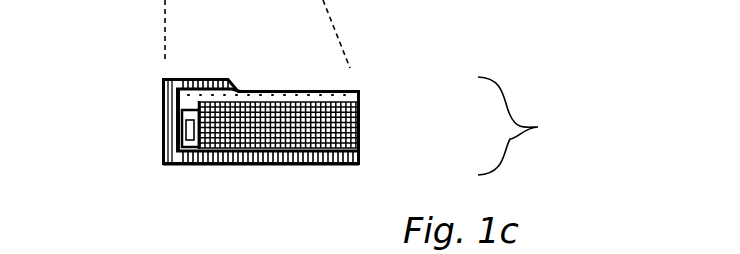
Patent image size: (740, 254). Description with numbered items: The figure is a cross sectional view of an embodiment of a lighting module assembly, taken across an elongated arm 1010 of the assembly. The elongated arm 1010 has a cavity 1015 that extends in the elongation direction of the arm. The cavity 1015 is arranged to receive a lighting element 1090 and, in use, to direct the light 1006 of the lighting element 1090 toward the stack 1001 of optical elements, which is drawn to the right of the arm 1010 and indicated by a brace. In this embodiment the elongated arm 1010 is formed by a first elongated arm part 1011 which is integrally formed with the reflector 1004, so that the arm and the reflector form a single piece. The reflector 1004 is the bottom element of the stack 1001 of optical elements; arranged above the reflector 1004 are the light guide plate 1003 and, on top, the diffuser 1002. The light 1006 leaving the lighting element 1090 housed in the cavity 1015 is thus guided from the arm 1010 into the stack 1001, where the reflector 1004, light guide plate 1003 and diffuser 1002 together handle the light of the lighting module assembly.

The stack of optical elements 1001 is at (539, 126).
The diffuser 1002 is at (362, 90).
The light guide plate 1003 is at (358, 122).
The reflector 1004 is at (358, 153).
The light of the lighting element 1006 is at (230, 120).
The elongated arm 1010 is at (163, 133).
The first elongated arm part 1011 is at (177, 165).
The cavity 1015 is at (182, 108).
The lighting element 1090 is at (180, 122).